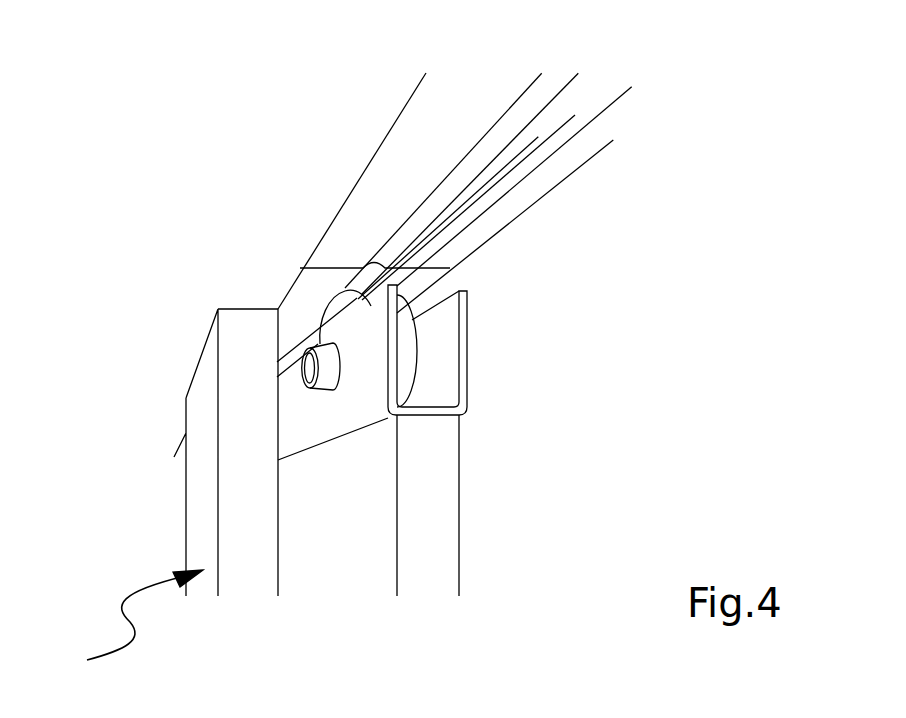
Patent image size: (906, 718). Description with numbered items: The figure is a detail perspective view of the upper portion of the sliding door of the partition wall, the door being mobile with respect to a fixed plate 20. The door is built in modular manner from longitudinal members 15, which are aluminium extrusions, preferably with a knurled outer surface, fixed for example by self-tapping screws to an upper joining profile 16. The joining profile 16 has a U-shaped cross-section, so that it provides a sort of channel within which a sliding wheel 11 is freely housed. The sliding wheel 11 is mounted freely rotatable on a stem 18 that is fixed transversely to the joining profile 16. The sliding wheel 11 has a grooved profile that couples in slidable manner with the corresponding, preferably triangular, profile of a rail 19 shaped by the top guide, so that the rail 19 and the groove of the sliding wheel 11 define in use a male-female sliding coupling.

The sliding wheel 11 is at (340, 313).
The longitudinal member 15 is at (330, 497).
The upper joining profile 16 is at (377, 336).
The stem 18 is at (307, 369).
The rail 19 is at (453, 208).
The fixed plate 20 is at (120, 630).